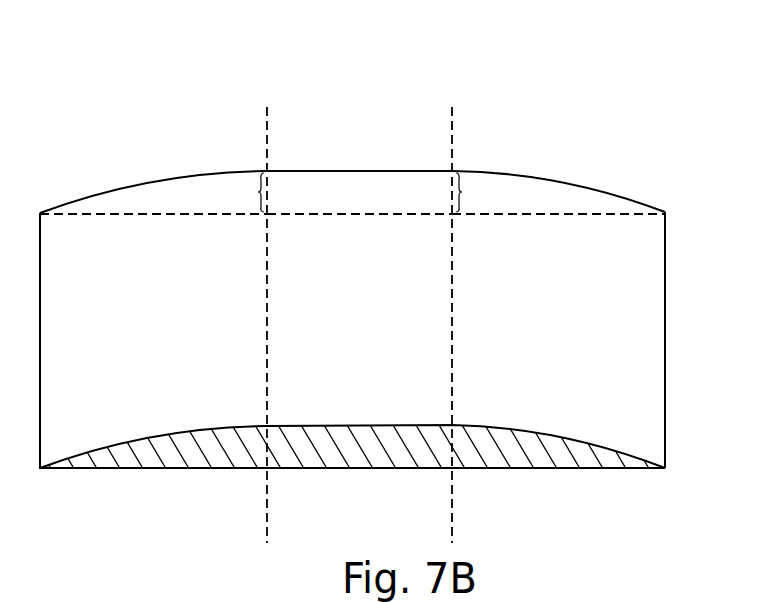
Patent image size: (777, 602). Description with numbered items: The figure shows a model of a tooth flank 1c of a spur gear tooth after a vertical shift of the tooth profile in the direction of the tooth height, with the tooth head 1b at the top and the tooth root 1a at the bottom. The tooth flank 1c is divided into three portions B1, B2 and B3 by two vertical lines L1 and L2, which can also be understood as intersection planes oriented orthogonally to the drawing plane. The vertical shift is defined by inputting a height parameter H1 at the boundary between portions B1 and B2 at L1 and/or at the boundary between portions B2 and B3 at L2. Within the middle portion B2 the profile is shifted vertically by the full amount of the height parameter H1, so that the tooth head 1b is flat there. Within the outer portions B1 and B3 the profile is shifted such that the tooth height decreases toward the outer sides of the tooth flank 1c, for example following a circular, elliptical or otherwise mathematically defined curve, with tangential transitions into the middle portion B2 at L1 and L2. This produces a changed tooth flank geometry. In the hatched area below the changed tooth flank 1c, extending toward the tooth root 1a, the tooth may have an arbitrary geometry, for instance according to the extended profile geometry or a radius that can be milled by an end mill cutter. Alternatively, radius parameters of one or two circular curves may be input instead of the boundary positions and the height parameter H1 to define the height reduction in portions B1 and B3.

The vertical line L1 is at (266, 101).
The vertical line L2 is at (448, 100).
The outer portion B1 is at (177, 200).
The middle portion B2 is at (427, 200).
The outer portion B3 is at (595, 198).
The height parameter H1 is at (366, 192).
The tooth root 1a is at (310, 470).
The tooth head 1b is at (343, 170).
The tooth flank 1c is at (652, 288).